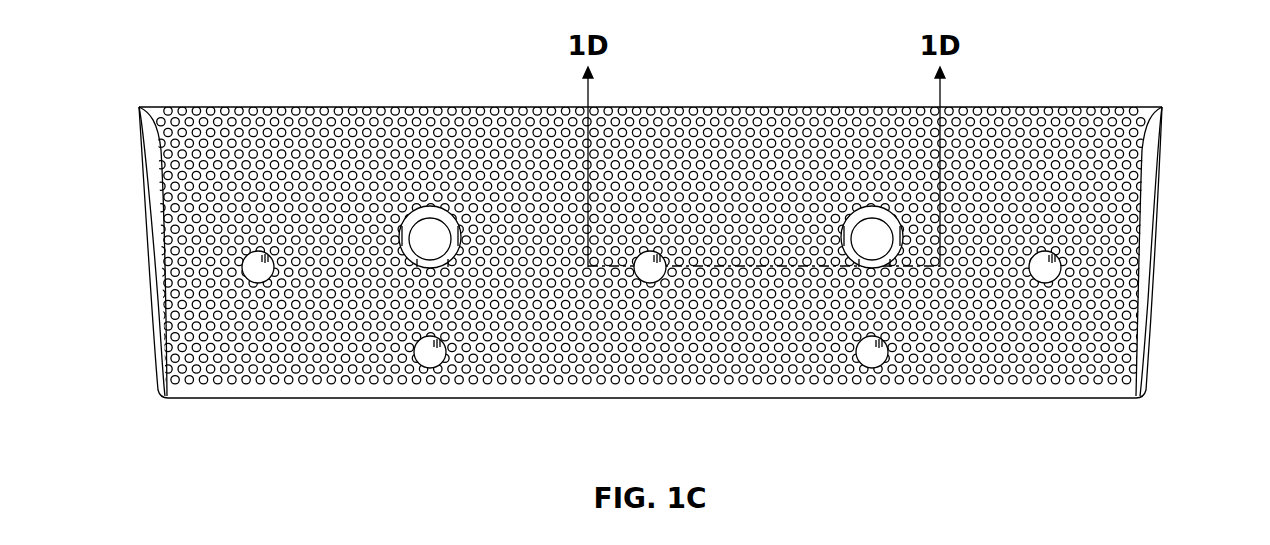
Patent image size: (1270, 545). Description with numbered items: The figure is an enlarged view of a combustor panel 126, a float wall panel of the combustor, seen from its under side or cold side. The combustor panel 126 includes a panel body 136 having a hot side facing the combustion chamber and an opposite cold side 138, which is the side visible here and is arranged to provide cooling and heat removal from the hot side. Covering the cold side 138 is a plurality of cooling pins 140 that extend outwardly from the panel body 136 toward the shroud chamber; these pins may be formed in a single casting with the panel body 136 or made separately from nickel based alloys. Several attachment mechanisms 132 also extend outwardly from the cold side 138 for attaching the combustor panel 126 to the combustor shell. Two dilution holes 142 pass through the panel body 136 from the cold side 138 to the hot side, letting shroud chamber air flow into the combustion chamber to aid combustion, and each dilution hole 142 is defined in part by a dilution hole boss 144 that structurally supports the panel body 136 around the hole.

The combustor panel 126 is at (176, 52).
The attachment mechanism 132 is at (258, 270).
The panel body 136 is at (1158, 288).
The cold side 138 is at (968, 392).
The cooling pins 140 is at (253, 120).
The dilution holes 142 is at (428, 230).
The dilution hole boss 144 is at (417, 266).